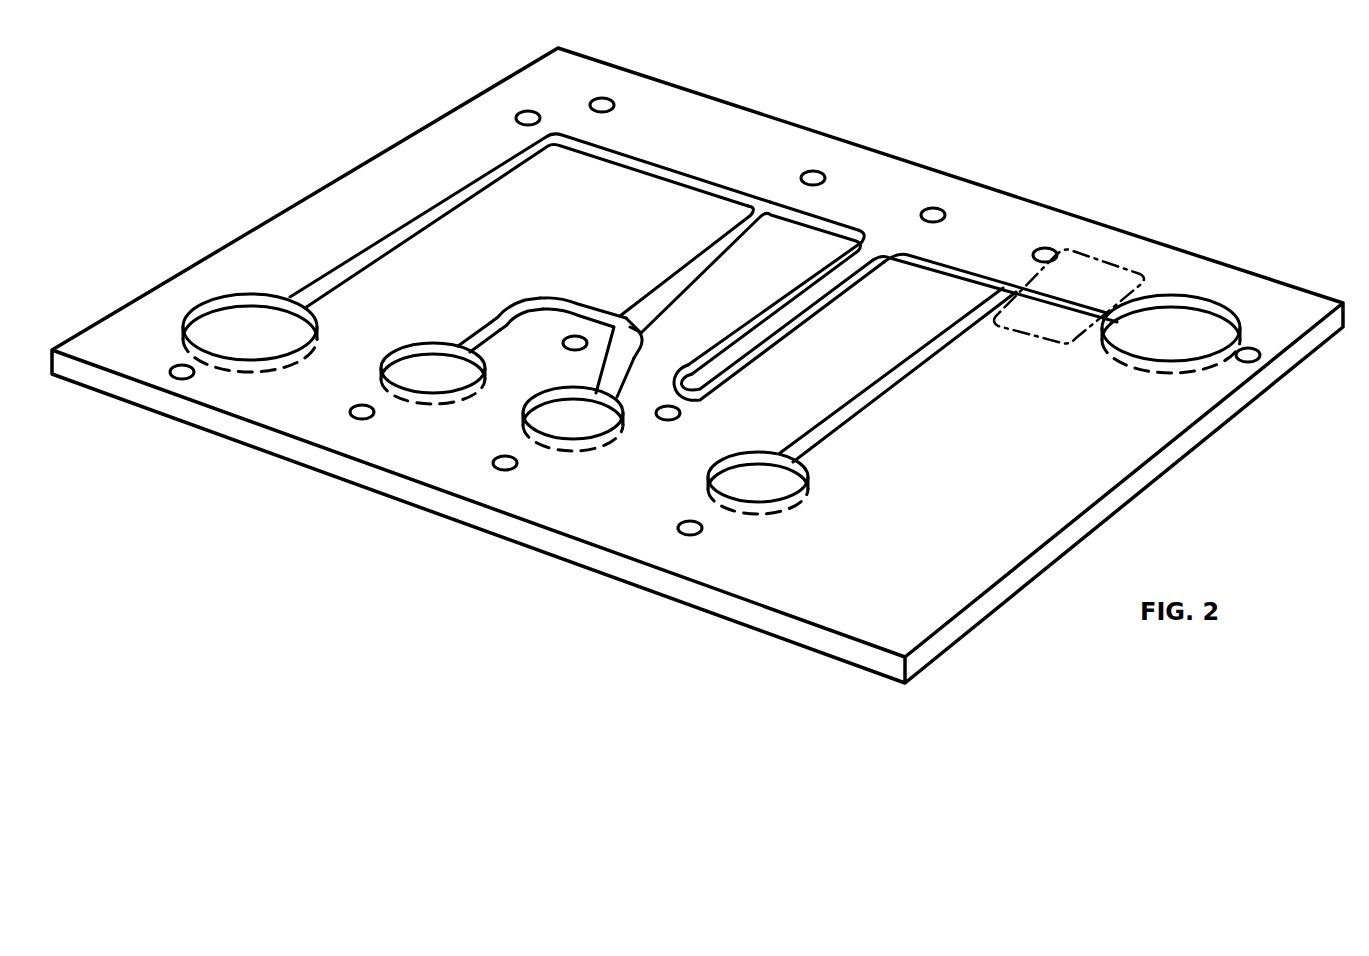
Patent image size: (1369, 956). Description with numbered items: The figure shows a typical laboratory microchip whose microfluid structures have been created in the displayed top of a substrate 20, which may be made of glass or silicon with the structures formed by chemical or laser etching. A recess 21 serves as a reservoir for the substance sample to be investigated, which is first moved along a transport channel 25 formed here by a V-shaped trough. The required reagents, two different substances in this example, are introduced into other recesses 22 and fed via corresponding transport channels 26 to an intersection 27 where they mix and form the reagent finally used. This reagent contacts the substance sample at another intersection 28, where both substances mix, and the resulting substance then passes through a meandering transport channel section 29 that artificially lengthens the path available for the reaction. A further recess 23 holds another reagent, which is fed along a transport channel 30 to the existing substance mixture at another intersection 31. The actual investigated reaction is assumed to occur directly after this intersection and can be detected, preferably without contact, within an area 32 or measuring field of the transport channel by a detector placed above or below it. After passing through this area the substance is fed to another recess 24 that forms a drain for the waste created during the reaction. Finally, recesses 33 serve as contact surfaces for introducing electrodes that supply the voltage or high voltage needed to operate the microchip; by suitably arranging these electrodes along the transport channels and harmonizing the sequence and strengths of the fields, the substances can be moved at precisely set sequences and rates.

The substrate 20 is at (553, 537).
The recess 21 is at (232, 322).
The recesses 22 is at (430, 365).
The recess 23 is at (803, 488).
The recess 24 is at (1153, 347).
The transport channel 25 is at (402, 232).
The transport channels 26 is at (492, 318).
The intersection 27 is at (600, 299).
The intersection 28 is at (775, 188).
The meandering transport channel section 29 is at (813, 330).
The transport channel 30 is at (916, 356).
The intersection 31 is at (1011, 260).
The area 32 is at (1112, 262).
The recesses 33 is at (522, 110).